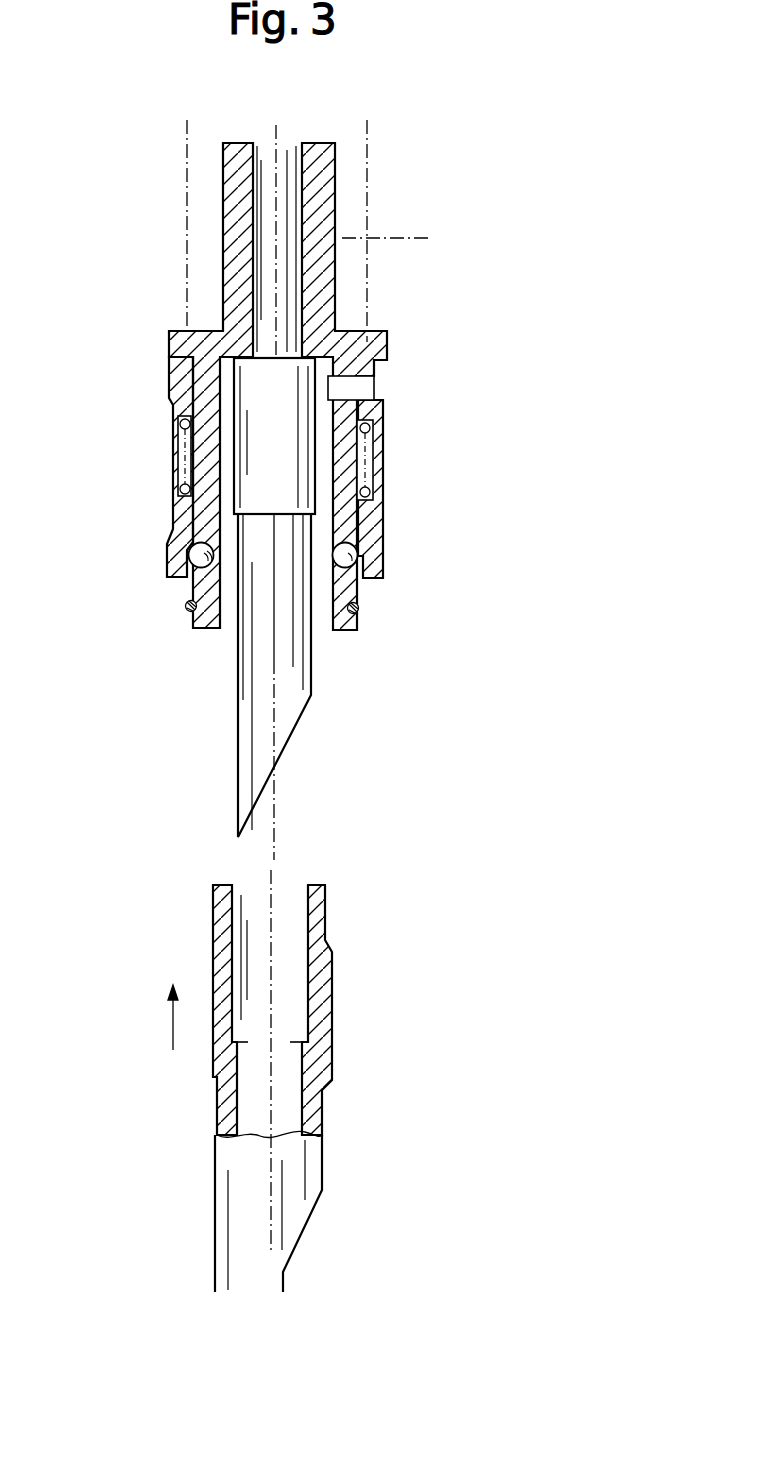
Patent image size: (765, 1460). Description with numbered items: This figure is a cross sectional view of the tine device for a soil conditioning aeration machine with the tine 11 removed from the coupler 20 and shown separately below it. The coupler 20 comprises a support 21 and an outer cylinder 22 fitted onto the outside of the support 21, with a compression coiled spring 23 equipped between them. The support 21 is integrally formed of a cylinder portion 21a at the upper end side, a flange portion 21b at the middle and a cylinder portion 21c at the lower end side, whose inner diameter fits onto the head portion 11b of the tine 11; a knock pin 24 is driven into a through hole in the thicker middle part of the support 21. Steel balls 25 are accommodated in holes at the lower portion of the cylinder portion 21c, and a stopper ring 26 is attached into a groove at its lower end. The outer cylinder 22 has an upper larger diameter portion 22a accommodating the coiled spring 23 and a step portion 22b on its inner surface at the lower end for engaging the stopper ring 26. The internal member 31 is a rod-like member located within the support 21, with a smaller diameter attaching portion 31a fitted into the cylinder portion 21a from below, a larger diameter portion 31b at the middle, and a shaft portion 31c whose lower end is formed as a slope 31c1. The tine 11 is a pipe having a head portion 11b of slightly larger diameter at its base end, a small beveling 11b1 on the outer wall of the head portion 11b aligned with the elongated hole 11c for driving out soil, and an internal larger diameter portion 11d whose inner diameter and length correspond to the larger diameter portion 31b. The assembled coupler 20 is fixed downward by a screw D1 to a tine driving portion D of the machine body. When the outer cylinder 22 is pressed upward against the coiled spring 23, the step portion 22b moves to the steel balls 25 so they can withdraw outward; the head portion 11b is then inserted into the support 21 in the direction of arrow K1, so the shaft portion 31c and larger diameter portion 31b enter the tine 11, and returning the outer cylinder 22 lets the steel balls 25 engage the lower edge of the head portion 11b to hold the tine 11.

The coupler 20 is at (321, 408).
The support 21 is at (289, 386).
The cylinder portion 21a is at (233, 196).
The flange portion 21b is at (385, 345).
The cylinder portion 21c is at (203, 590).
The outer cylinder 22 is at (320, 474).
The larger diameter portion 22a is at (380, 487).
The step portion 22b is at (358, 567).
The coiled spring 23 is at (385, 447).
The knock pin 24 is at (360, 390).
The steel ball 25 is at (185, 563).
The stopper ring 26 is at (360, 612).
The internal member 31 is at (249, 544).
The attaching portion 31a is at (268, 258).
The larger diameter portion 31b is at (250, 453).
The shaft portion 31c is at (248, 710).
The slope 31c1 is at (298, 730).
The tine 11 is at (333, 1088).
The head portion 11b is at (333, 1013).
The beveling 11b1 is at (327, 915).
The elongated hole 11c is at (285, 1277).
The larger diameter portion 11d is at (312, 972).
The tine driving portion D is at (367, 145).
The screw D1 is at (410, 236).
The arrow K1 is at (177, 998).